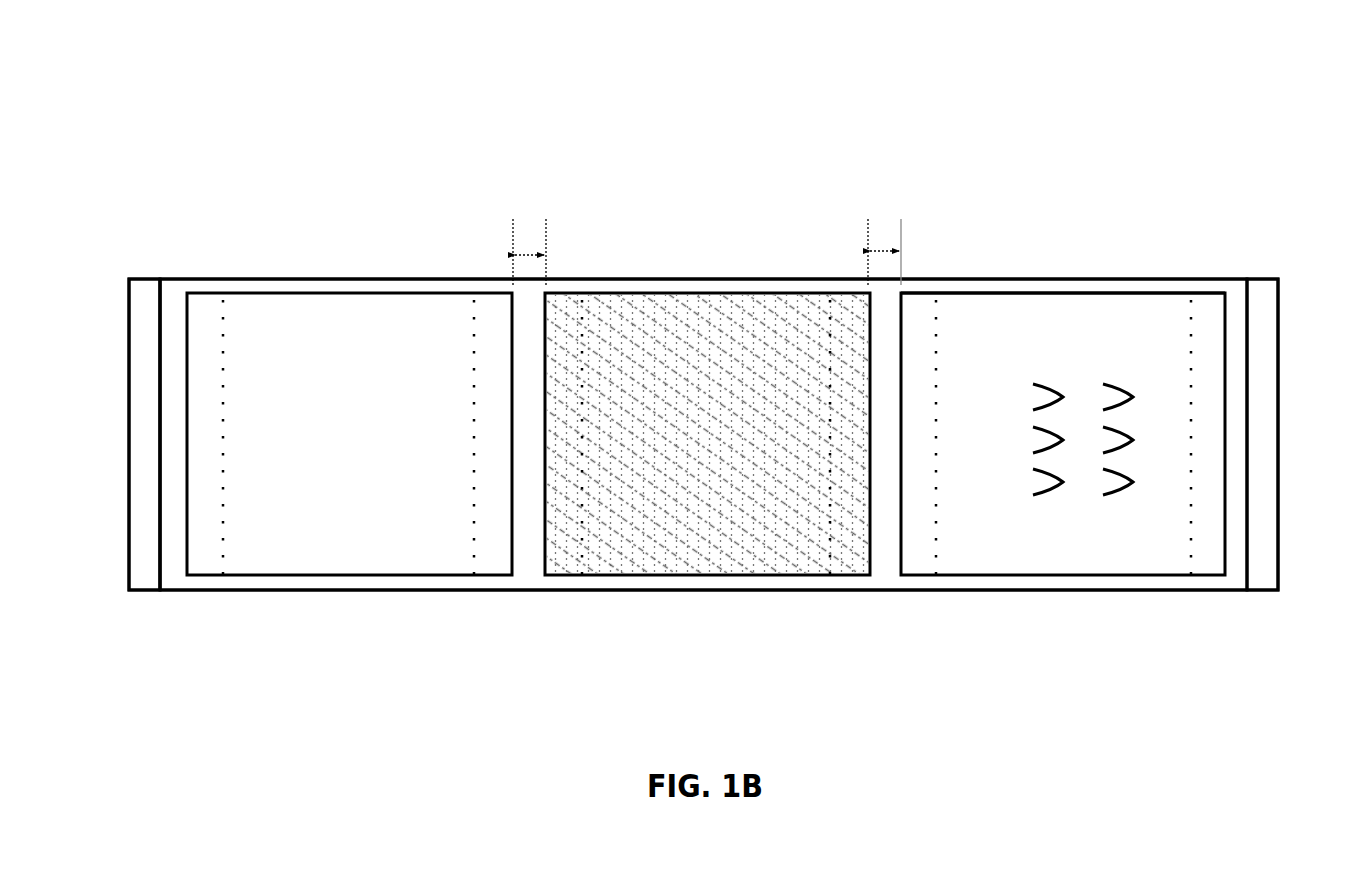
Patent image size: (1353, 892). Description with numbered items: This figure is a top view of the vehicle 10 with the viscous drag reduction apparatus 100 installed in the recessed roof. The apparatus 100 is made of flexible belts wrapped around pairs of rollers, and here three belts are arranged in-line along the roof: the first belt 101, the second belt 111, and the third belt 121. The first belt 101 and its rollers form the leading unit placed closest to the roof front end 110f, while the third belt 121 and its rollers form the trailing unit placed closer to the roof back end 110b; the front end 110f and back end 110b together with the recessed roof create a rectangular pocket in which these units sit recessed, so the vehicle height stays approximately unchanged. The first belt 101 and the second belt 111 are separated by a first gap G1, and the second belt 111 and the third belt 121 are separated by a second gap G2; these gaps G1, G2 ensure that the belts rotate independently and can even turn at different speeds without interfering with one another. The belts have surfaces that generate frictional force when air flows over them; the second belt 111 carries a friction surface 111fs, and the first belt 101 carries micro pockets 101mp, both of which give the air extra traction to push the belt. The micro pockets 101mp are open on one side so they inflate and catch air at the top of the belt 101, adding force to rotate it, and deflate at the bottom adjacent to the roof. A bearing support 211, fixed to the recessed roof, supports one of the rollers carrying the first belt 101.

The vehicle 10 is at (1281, 158).
The viscous drag reduction apparatus 100 is at (1143, 292).
The roof back end 110b is at (141, 591).
The roof front end 110f is at (1268, 592).
The third belt 121 is at (368, 578).
The second belt 111 is at (698, 482).
The friction surface 111fs is at (695, 577).
The first belt 101 is at (1063, 476).
The micro pockets 101mp is at (1132, 507).
The bearing support 211 is at (957, 293).
The first gap G1 is at (888, 248).
The second gap G2 is at (532, 250).